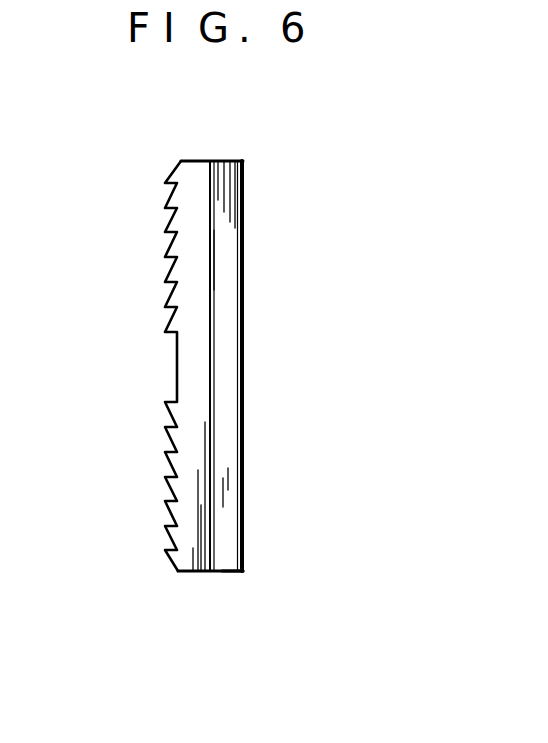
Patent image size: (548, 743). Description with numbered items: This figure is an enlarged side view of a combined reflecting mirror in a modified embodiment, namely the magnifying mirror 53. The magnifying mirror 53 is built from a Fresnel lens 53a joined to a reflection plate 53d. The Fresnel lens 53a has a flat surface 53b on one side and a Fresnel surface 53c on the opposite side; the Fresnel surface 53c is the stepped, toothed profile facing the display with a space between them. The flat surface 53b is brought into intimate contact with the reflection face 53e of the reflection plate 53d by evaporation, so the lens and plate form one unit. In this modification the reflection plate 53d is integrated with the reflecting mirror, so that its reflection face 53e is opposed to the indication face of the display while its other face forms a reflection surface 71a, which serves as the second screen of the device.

The magnifying mirror 53 is at (240, 145).
The Fresnel lens 53a is at (185, 573).
The flat surface 53b is at (208, 260).
The Fresnel surface 53c is at (167, 293).
The reflection plate 53d is at (227, 573).
The reflection face 53e is at (208, 198).
The reflection surface 71a is at (243, 385).